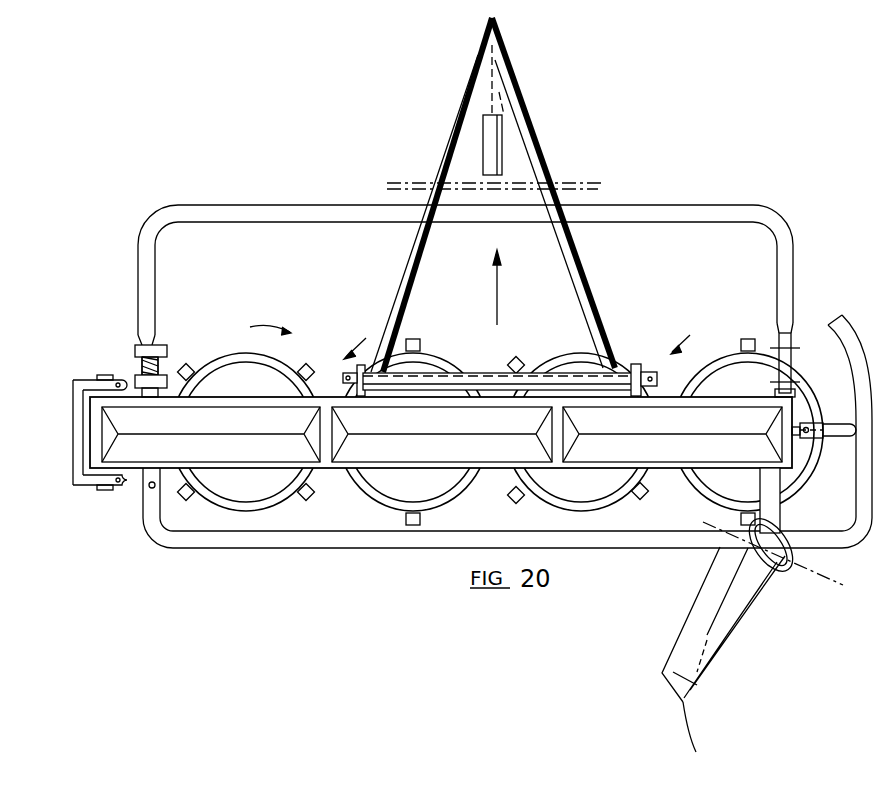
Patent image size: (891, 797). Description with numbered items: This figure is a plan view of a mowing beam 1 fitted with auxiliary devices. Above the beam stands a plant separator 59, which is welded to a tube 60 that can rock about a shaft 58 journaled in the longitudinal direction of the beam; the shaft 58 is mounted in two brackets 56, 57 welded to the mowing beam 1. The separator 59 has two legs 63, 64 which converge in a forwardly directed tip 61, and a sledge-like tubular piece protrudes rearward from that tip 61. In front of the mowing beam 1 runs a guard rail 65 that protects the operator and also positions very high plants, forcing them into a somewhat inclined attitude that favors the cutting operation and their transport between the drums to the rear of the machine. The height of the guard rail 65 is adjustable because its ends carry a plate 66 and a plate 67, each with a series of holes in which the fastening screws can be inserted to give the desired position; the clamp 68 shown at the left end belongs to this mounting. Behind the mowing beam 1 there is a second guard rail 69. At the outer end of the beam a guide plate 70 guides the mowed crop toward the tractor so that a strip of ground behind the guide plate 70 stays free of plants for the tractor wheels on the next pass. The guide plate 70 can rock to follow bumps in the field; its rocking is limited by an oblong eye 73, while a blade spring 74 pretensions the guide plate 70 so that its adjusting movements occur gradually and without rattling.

The mowing beam 1 is at (489, 477).
The bracket 56 is at (353, 370).
The bracket 57 is at (643, 368).
The shaft 58 is at (658, 381).
The plant separator 59 is at (580, 262).
The tube 60 is at (478, 382).
The tip 61 is at (498, 35).
The leg 63 is at (526, 150).
The leg 64 is at (457, 172).
The guard rail 65 is at (735, 211).
The plate 66 is at (770, 348).
The plate 67 is at (164, 372).
The clamp 68 is at (137, 350).
The guard rail 69 is at (205, 549).
The guide plate 70 is at (695, 636).
The oblong eye 73 is at (777, 573).
The blade spring 74 is at (737, 619).